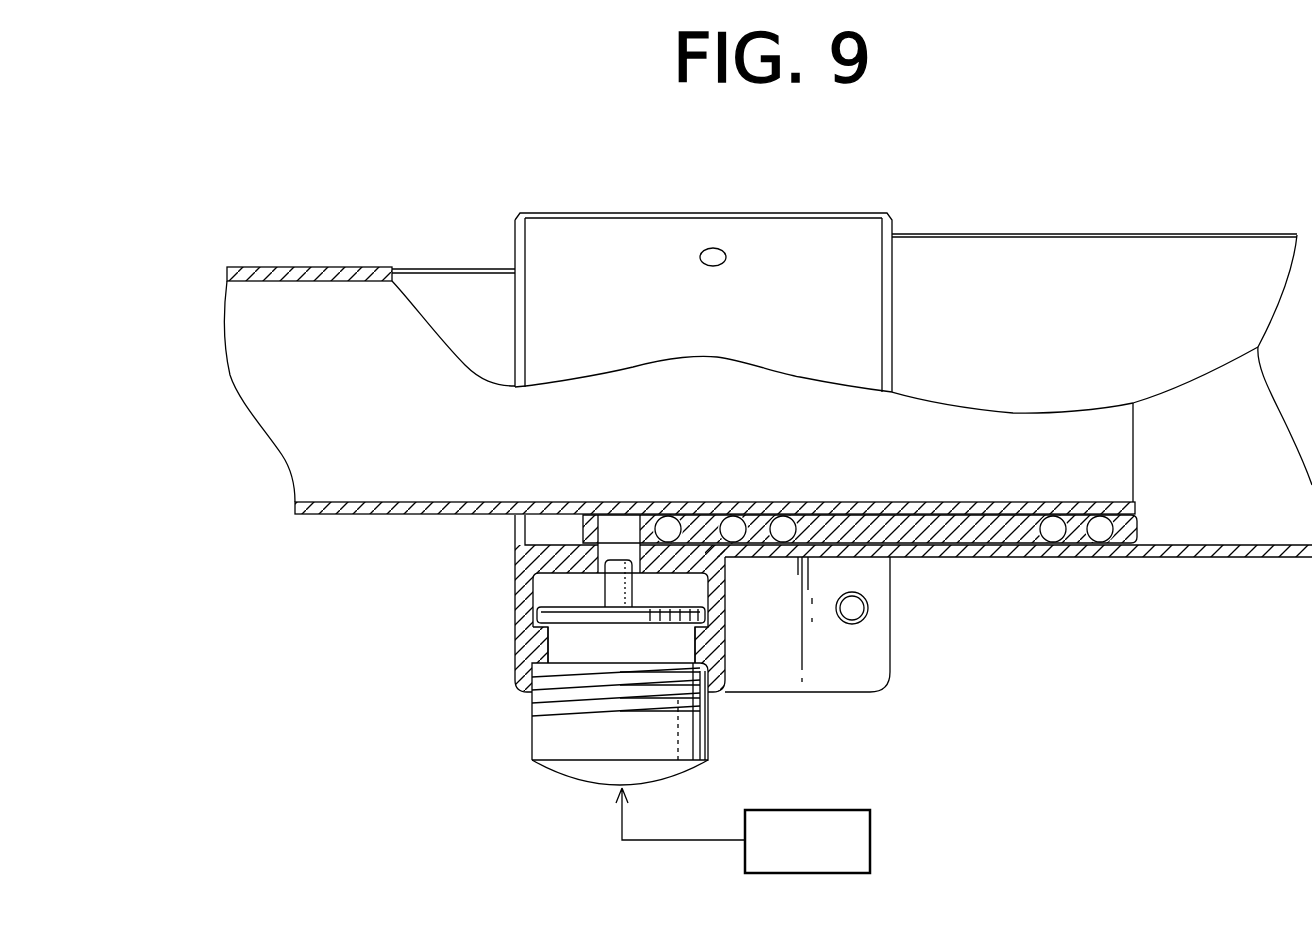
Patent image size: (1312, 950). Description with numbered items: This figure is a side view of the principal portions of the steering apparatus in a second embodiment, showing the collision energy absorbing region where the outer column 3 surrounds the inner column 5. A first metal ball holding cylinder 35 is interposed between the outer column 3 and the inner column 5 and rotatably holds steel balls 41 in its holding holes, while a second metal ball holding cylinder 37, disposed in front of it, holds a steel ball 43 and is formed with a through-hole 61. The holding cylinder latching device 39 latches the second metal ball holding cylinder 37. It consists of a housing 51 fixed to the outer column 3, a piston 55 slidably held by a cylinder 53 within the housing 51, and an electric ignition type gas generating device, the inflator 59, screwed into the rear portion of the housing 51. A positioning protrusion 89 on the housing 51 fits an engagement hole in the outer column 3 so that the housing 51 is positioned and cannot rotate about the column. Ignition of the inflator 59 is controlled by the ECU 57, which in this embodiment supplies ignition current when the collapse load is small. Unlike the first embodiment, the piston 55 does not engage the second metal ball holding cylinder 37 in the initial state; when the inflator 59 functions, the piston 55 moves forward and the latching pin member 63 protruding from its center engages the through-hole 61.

The outer column 3 is at (1167, 246).
The inner column 5 is at (302, 267).
The first metal ball holding cylinder 35 is at (950, 540).
The second metal ball holding cylinder 37 is at (583, 516).
The holding cylinder latching device 39 is at (508, 767).
The steel balls 41 is at (781, 516).
The steel balls 43 is at (668, 517).
The housing 51 is at (586, 198).
The cylinder 53 is at (543, 590).
The piston 55 is at (594, 645).
The ECU 57 is at (866, 825).
The inflator 59 is at (693, 742).
The through-hole 61 is at (618, 522).
The latching pin member 63 is at (612, 582).
The positioning protrusion 89 is at (713, 248).